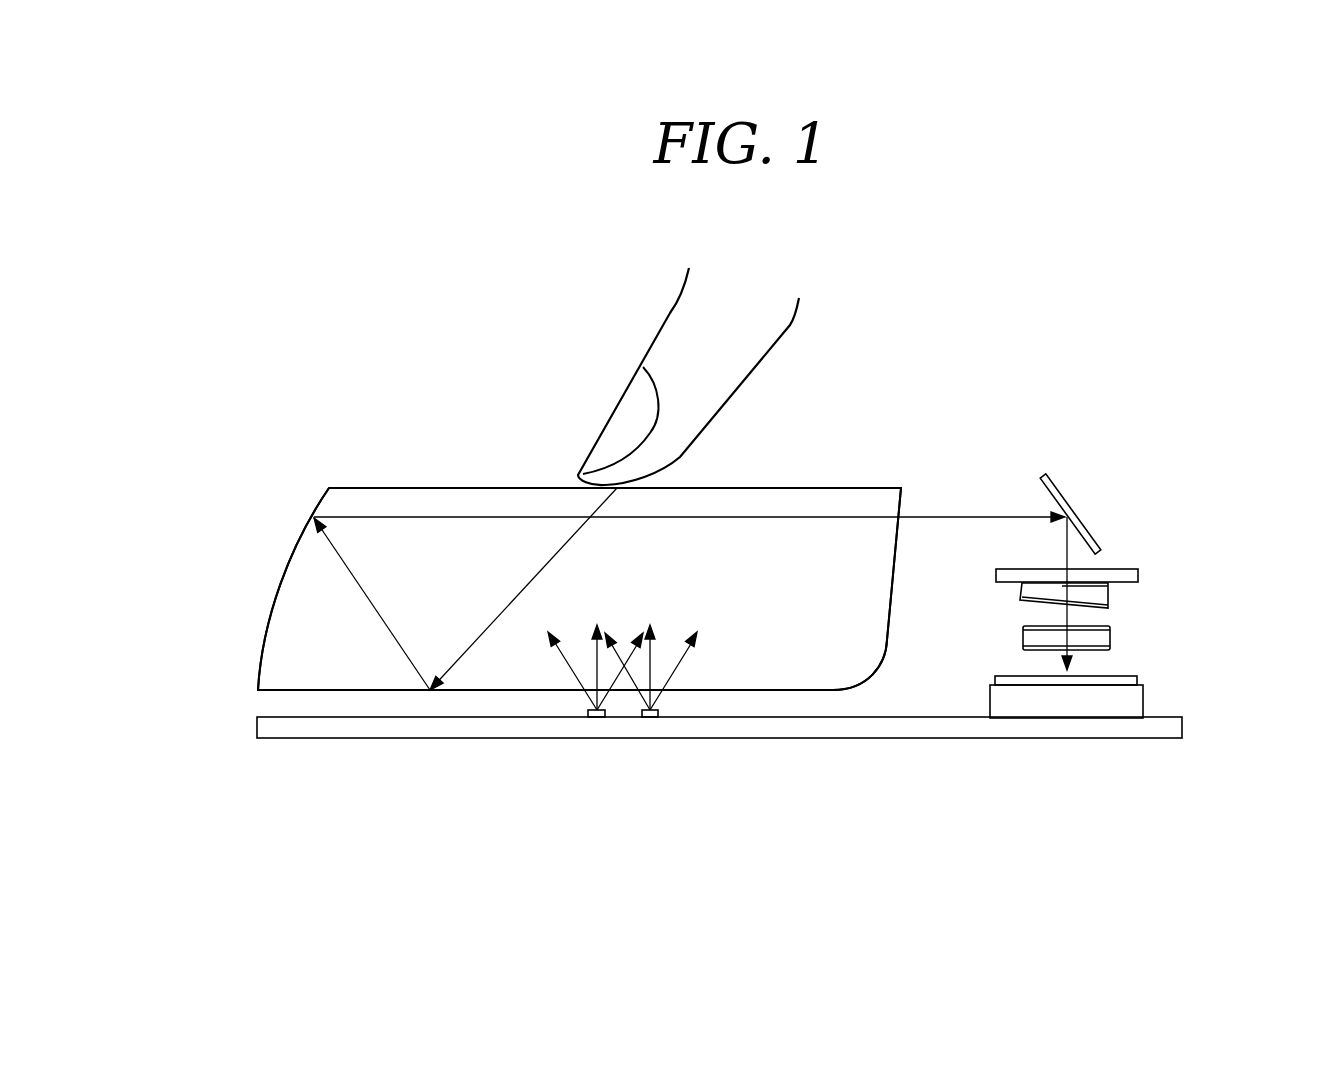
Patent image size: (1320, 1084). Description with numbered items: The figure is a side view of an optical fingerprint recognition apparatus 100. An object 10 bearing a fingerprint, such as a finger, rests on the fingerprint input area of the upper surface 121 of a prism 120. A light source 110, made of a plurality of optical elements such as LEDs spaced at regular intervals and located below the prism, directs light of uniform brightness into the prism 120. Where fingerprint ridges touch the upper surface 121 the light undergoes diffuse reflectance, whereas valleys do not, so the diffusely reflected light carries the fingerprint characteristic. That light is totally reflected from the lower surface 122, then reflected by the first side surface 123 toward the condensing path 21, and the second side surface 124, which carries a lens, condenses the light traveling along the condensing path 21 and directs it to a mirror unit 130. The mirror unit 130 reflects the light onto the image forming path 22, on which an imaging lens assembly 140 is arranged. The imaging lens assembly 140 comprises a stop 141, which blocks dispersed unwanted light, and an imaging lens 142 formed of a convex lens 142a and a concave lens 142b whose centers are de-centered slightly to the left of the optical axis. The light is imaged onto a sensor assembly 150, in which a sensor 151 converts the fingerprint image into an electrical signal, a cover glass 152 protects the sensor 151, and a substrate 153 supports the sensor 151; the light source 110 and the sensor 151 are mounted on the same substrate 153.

The optical fingerprint recognition apparatus 100 is at (586, 265).
The object 10 is at (670, 338).
The light source 110 is at (597, 717).
The prism 120 is at (556, 542).
The upper surface 121 is at (458, 487).
The lower surface 122 is at (732, 690).
The first side surface 123 is at (277, 602).
The second side surface 124 is at (895, 574).
The condensing path 21 is at (946, 517).
The image forming path 22 is at (1066, 547).
The mirror unit 130 is at (1080, 510).
The imaging lens assembly 140 is at (1146, 611).
The stop 141 is at (1138, 576).
The imaging lens 142 is at (1131, 621).
The convex lens 142a is at (1108, 596).
The concave lens 142b is at (1106, 639).
The sensor assembly 150 is at (777, 706).
The sensor 151 is at (1135, 703).
The cover glass 152 is at (1137, 681).
The substrate 153 is at (747, 730).